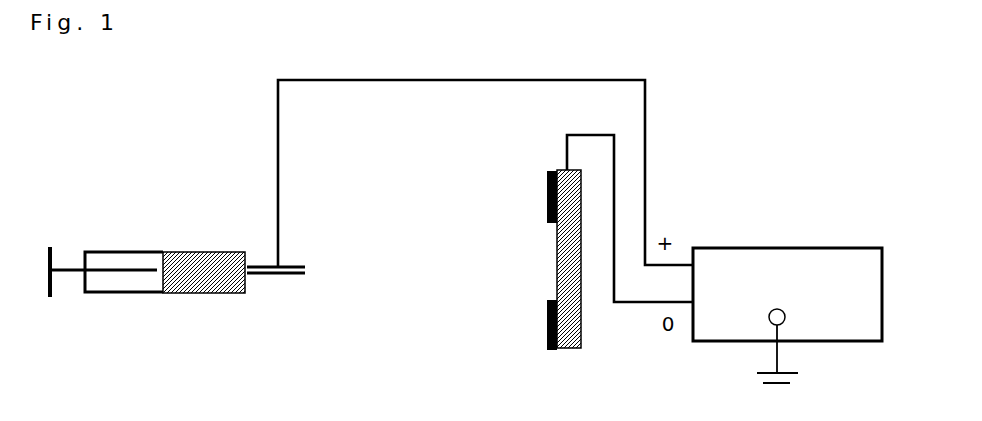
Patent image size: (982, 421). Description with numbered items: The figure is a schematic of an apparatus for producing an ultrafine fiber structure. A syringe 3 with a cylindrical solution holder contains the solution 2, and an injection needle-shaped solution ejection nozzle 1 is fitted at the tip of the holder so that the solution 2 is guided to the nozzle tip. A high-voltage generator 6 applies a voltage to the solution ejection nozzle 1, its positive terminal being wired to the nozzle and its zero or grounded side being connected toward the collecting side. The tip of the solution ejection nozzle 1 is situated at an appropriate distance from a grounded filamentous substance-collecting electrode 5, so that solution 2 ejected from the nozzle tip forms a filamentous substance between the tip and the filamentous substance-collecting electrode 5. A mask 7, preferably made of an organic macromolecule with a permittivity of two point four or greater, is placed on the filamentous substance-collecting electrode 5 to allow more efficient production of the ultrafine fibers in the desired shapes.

The solution ejection nozzle 1 is at (290, 276).
The solution 2 is at (208, 282).
The syringe 3 is at (193, 252).
The filamentous substance-collecting electrode 5 is at (582, 333).
The high-voltage generator 6 is at (763, 248).
The mask 7 is at (548, 332).